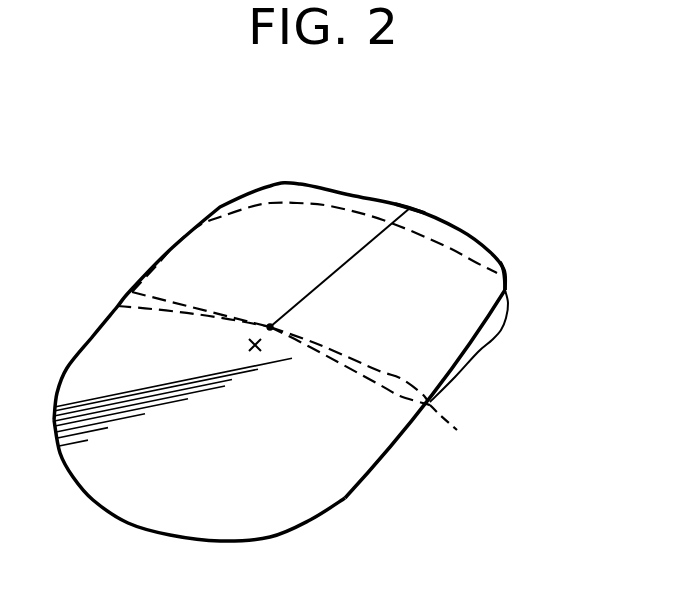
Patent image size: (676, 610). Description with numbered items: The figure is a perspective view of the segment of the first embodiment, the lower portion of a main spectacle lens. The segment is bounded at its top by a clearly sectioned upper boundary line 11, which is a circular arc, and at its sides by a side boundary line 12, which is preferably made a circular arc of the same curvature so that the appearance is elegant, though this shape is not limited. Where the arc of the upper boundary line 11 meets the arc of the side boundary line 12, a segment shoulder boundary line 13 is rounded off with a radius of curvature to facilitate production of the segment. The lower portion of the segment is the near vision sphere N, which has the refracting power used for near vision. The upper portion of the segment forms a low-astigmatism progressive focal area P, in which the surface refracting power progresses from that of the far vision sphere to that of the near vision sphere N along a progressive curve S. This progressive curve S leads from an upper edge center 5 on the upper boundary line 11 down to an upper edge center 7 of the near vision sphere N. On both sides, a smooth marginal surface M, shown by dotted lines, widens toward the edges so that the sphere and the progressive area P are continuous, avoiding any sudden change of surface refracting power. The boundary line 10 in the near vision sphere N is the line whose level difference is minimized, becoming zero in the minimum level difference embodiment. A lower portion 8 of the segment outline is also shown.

The upper edge center 5 is at (410, 208).
The upper edge center of the near vision sphere 7 is at (270, 323).
The lower edge of lens 8 is at (127, 522).
The boundary line 10 is at (341, 502).
The upper boundary line 11 is at (460, 230).
The side boundary line 12 is at (480, 349).
The segment shoulder boundary line 13 is at (507, 270).
The progressive curve S is at (332, 275).
The progressive focal area P is at (404, 313).
The near vision sphere N is at (270, 449).
The marginal surface M is at (498, 447).